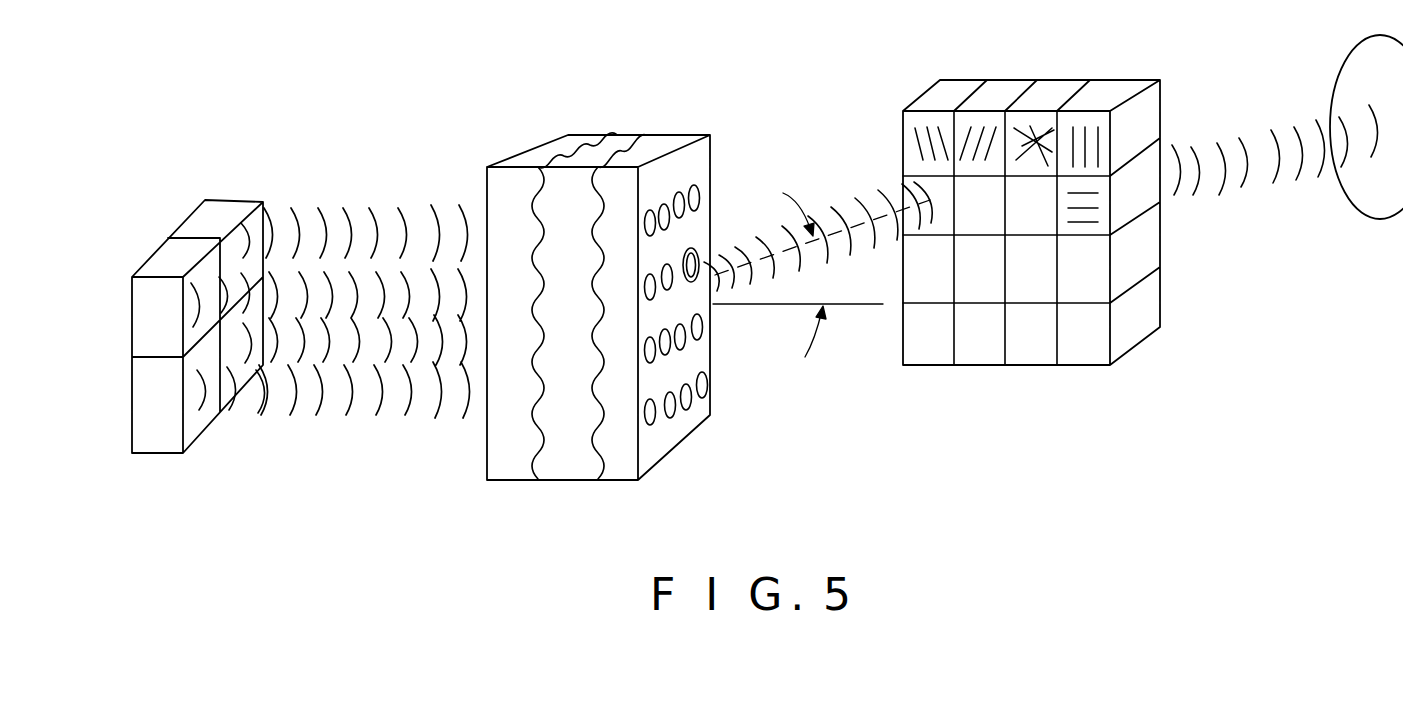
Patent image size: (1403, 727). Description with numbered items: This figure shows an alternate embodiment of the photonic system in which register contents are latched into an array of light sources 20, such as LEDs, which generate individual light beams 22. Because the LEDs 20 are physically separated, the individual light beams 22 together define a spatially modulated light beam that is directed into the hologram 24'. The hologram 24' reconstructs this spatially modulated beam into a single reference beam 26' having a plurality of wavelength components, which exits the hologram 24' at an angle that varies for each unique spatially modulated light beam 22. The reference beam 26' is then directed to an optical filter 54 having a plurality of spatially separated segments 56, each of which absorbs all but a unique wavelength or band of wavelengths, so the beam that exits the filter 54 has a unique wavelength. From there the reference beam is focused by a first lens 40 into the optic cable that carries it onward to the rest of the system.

The light source 20 is at (150, 440).
The light beam 22 is at (293, 408).
The hologram 24' is at (598, 333).
The optical filter 54 is at (687, 438).
The reference beam 26' is at (818, 238).
The segment 56 is at (1025, 278).
The first lens 40 is at (1358, 213).